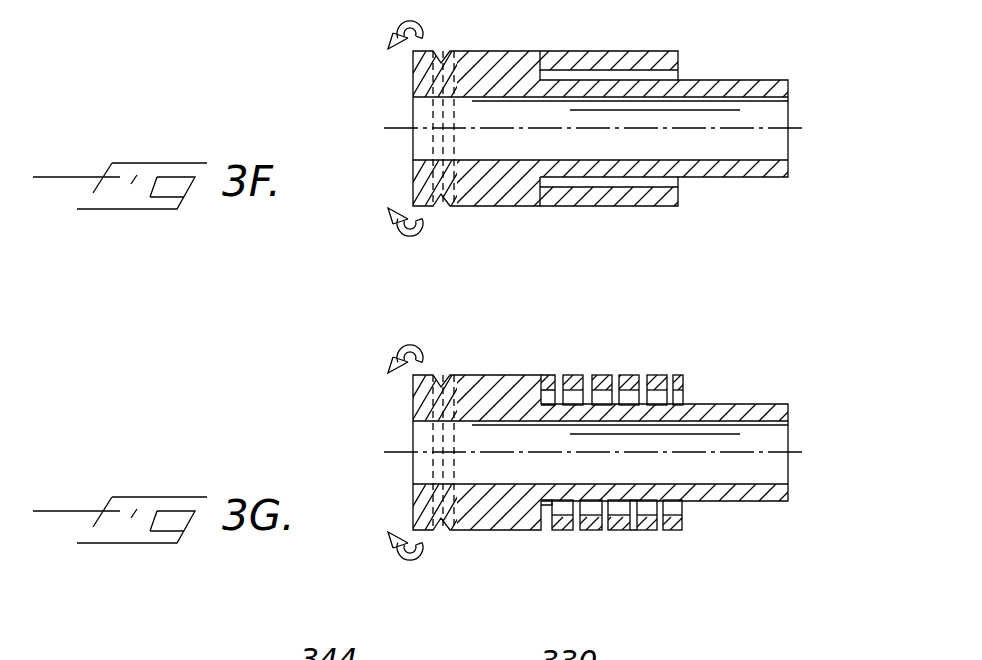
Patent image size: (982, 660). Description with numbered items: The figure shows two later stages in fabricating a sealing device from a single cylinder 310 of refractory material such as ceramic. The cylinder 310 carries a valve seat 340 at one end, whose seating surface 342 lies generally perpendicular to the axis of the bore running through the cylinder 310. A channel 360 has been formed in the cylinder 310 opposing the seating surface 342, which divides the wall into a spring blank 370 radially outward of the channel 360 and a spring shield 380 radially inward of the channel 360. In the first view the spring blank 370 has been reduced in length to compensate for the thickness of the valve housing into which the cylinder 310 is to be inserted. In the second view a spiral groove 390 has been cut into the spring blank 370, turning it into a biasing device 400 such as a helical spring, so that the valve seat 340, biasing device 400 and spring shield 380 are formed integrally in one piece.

In FIG. 3F, the cylinder 310 is at (507, 52).
In FIG. 3F, the valve seat 340 is at (404, 82).
In FIG. 3G, the valve seat 340 is at (404, 405).
In FIG. 3F, the seating surface 342 is at (412, 156).
In FIG. 3F, the channel 360 is at (678, 77).
In FIG. 3F, the spring blank 370 is at (638, 52).
In FIG. 3G, the spring blank 370 is at (542, 375).
In FIG. 3F, the spring shield 380 is at (772, 160).
In FIG. 3G, the spring shield 380 is at (772, 484).
In FIG. 3G, the spiral groove 390 is at (643, 375).
In FIG. 3G, the biasing device 400 is at (609, 546).